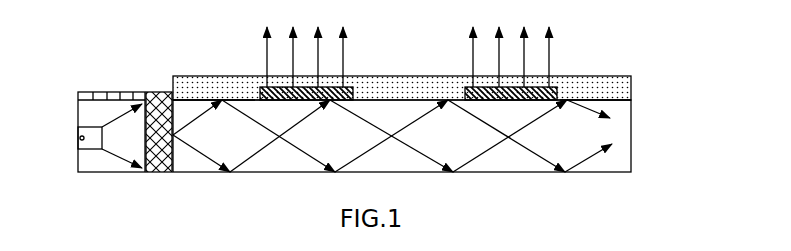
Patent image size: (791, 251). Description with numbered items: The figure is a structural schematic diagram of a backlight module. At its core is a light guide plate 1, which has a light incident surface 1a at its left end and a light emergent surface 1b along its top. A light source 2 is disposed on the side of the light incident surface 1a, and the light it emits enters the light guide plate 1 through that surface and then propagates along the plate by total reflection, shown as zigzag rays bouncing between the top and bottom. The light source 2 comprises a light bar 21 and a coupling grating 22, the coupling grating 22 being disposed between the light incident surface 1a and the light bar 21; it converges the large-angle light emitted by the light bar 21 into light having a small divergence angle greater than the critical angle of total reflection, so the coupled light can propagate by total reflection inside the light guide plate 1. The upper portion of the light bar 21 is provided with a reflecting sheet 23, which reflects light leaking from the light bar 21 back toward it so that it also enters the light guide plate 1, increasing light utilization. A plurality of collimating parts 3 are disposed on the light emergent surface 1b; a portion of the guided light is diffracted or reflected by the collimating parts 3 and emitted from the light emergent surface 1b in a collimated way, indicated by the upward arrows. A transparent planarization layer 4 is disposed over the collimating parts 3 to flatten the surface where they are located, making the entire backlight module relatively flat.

The light guide plate 1 is at (631, 130).
The light incident surface 1a is at (180, 100).
The light emergent surface 1b is at (587, 98).
The light source 2 is at (165, 58).
The light bar 21 is at (78, 118).
The coupling grating 22 is at (158, 92).
The reflecting sheet 23 is at (120, 92).
The collimating part 3 is at (353, 87).
The planarization layer 4 is at (631, 88).